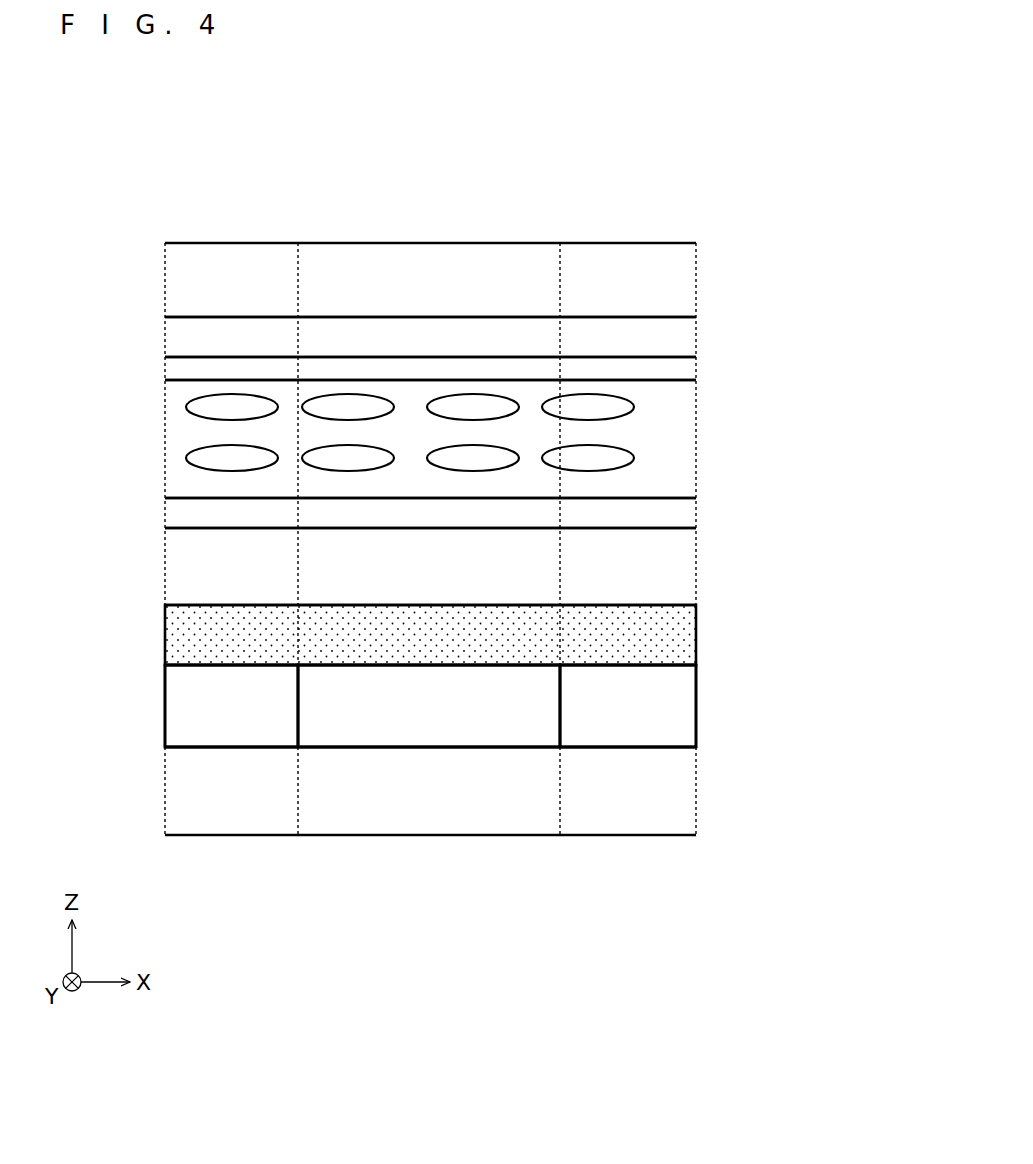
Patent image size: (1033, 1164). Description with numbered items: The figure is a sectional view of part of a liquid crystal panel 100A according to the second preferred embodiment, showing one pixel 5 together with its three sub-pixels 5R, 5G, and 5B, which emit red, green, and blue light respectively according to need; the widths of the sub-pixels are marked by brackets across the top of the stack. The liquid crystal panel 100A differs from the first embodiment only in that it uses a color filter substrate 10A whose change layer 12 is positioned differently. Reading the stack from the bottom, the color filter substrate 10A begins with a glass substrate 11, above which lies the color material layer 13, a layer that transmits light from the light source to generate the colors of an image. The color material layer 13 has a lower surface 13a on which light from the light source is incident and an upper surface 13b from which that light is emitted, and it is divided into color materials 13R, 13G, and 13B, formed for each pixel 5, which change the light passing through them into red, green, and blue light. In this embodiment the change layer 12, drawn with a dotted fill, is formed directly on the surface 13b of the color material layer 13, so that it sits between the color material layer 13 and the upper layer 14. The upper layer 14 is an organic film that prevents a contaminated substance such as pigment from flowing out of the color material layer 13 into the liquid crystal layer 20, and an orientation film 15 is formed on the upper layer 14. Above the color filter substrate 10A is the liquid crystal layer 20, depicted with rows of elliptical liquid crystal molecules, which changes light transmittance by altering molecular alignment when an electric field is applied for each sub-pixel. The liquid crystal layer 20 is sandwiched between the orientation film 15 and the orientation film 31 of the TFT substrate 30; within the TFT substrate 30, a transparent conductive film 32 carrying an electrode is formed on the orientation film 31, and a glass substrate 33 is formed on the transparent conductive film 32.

The liquid crystal panel 100A is at (697, 140).
The pixel 5 is at (645, 192).
The sub-pixel 5R is at (298, 243).
The sub-pixel 5G is at (560, 243).
The sub-pixel 5B is at (696, 243).
The color filter substrate 10A is at (789, 498).
The glass substrate 11 is at (680, 790).
The change layer 12 is at (683, 635).
The color material layer 13 is at (698, 707).
The color material 13R is at (190, 678).
The color material 13G is at (335, 700).
The color material 13B is at (605, 720).
The surface 13a is at (198, 750).
The surface 13b is at (197, 660).
The upper layer 14 is at (680, 565).
The orientation film 15 is at (680, 513).
The liquid crystal layer 20 is at (680, 430).
The TFT substrate 30 is at (785, 267).
The orientation film 31 is at (680, 366).
The transparent conductive film 32 is at (680, 332).
The glass substrate 33 is at (680, 273).